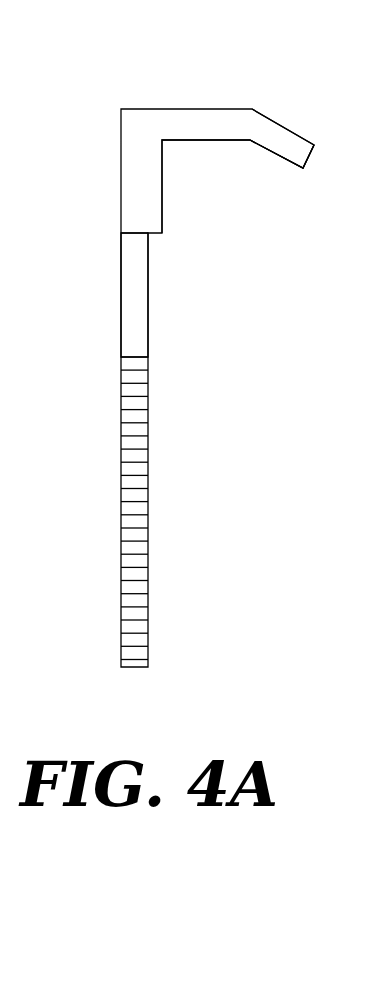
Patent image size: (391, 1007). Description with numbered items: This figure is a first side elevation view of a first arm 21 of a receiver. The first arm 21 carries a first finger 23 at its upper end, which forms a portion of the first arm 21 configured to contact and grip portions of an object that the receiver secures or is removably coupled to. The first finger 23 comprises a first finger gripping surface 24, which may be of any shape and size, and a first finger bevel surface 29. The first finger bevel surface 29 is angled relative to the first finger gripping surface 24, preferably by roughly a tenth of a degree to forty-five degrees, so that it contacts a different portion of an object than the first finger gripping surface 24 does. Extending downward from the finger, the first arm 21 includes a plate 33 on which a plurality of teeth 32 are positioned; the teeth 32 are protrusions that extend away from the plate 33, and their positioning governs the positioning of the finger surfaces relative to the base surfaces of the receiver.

The first arm 21 is at (107, 86).
The first finger 23 is at (233, 127).
The first finger gripping surface 24 is at (195, 149).
The first finger bevel surface 29 is at (280, 170).
The plate 33 is at (135, 310).
The teeth 32 is at (128, 425).